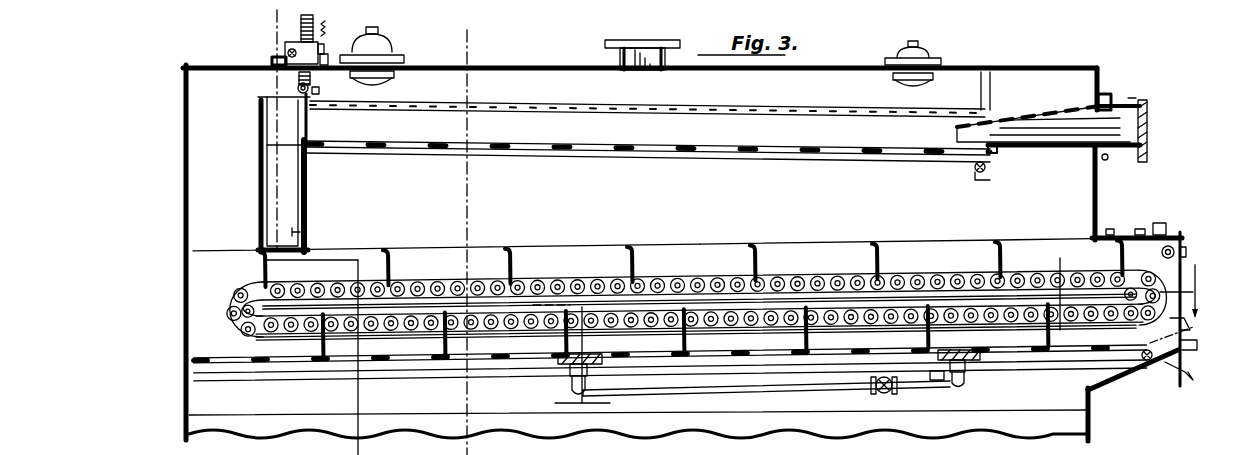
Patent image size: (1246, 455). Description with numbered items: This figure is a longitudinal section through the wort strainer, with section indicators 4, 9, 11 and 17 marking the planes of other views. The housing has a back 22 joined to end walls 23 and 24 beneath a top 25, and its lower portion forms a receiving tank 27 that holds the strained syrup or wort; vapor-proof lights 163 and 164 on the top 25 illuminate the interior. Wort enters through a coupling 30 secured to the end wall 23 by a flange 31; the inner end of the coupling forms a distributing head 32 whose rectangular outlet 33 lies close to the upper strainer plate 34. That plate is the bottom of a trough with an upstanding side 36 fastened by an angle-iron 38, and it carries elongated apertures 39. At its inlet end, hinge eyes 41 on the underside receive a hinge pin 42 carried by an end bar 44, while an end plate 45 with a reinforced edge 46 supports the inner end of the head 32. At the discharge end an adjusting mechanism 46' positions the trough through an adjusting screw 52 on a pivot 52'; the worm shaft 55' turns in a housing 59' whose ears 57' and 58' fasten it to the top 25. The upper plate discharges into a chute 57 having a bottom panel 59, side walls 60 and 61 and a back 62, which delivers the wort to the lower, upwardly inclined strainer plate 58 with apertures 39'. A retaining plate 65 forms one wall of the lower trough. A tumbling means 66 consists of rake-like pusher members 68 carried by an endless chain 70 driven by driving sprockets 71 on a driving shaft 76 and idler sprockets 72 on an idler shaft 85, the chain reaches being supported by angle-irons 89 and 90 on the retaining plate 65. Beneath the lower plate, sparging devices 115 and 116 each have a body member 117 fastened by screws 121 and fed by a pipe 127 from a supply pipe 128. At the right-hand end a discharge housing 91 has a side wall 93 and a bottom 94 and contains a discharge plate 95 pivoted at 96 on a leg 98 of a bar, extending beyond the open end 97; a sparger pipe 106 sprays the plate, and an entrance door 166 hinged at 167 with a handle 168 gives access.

The section line 4- 4 is at (300, 9).
The section line 9- 9 is at (548, 237).
The section line 11- 11 is at (1133, 283).
The section line 17- 17 is at (452, 44).
The back wall 22 is at (548, 192).
The end wall 23 is at (1099, 196).
The end wall 24 is at (183, 232).
The top 25 is at (545, 68).
The receiving tank 27 is at (1080, 432).
The coupling 30 is at (1132, 100).
The flange 31 is at (1106, 95).
The distributing head 32 is at (1030, 148).
The rectangular outlet 33 is at (958, 130).
The strainer plate 34 is at (713, 148).
The upstanding side 36 is at (650, 110).
The angle-iron 38 is at (748, 162).
The elongated apertures 39 is at (648, 137).
The apertures 39' is at (389, 342).
The hinge eyes 41 is at (986, 170).
The hinge pin 42 is at (982, 181).
The end bar 44 is at (992, 96).
The end plate 45 is at (960, 142).
The reinforced upper edge 46 is at (1010, 158).
The adjusting mechanism 46' is at (348, 20).
The adjusting screw 52 is at (321, 21).
The pivot 52' is at (332, 106).
The worm shaft 55' is at (281, 39).
The directing chute 57 is at (309, 217).
The ear 57' is at (248, 48).
The lower strainer plate 58 is at (670, 373).
The ear 58' is at (337, 50).
The bottom panel 59 is at (325, 228).
The housing 59' is at (343, 37).
The side wall 60 is at (308, 178).
The side wall 61 is at (259, 200).
The back 62 is at (290, 120).
The retaining plate 65 is at (419, 250).
The tumbling means 66 is at (795, 250).
The rake-like pusher members 68 is at (637, 270).
The endless chain 70 is at (595, 283).
The driving sprockets 71 is at (1134, 300).
The idler sprockets 72 is at (238, 293).
The driving shaft 76 is at (1138, 331).
The idler shaft 85 is at (250, 337).
The supporting angle-iron 89 is at (444, 286).
The supporting angle-iron 90 is at (368, 382).
The discharge housing 91 is at (1182, 270).
The side wall 93 is at (1172, 316).
The bottom 94 is at (1128, 384).
The discharge plate 95 is at (1198, 345).
The pivotal mounting 96 is at (1148, 361).
The open end 97 is at (1188, 254).
The leg 98 is at (1178, 382).
The sparger pipe 106 is at (1176, 246).
The sparging device 115 is at (968, 376).
The sparging device 116 is at (590, 375).
The body member 117 is at (590, 357).
The screws 121 is at (931, 376).
The pipe 127 is at (805, 393).
The supply pipe 128 is at (891, 393).
The vapor-proof light 163 is at (926, 60).
The vapor-proof light 164 is at (381, 46).
The entrance door 166 is at (1141, 229).
The hinge 167 is at (1111, 229).
The handle 168 is at (1166, 227).